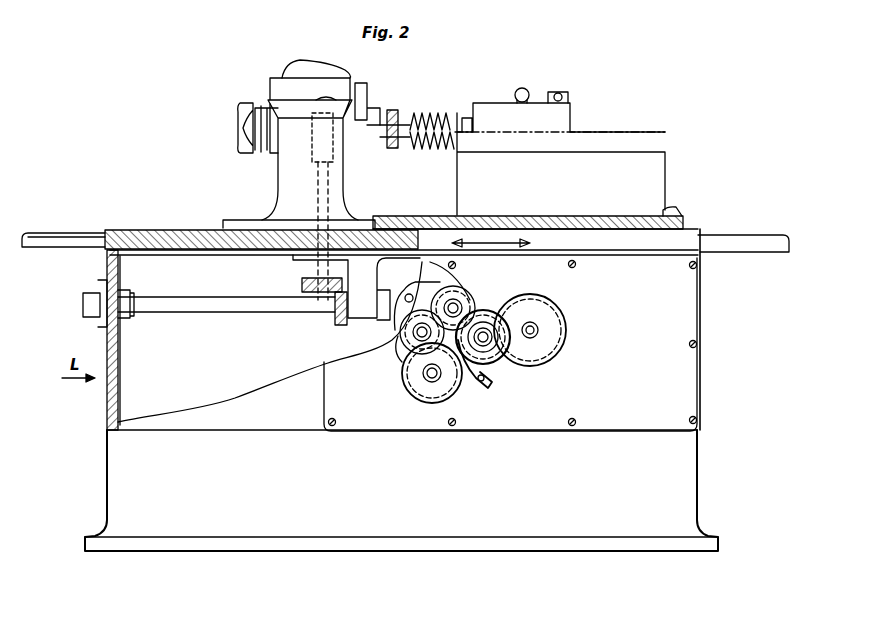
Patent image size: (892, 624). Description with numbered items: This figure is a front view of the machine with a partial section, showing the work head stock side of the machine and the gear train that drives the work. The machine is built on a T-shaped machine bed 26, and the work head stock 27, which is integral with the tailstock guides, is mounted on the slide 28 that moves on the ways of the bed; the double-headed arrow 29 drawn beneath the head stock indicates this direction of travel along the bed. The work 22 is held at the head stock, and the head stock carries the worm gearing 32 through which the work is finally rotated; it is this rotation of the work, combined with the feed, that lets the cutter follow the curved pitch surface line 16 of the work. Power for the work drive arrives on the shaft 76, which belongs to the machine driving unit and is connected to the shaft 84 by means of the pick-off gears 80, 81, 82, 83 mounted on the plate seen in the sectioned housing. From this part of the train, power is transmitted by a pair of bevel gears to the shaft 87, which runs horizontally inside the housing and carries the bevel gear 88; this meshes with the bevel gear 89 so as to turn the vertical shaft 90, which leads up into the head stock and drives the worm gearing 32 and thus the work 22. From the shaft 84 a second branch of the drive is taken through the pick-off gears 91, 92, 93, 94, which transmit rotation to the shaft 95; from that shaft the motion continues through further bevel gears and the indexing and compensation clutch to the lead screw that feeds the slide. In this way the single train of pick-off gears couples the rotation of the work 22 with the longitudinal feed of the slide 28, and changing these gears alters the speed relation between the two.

The curved pitch surface line 16 is at (466, 112).
The work 22 is at (433, 114).
The machine bed 26 is at (118, 357).
The work head stock 27 is at (457, 218).
The slide 28 is at (152, 230).
The arrow of movement 29 is at (489, 243).
The worm gearing 32 is at (312, 134).
The shaft 76 is at (432, 384).
The pick-off gear 80 is at (408, 388).
The pick-off gear 81 is at (405, 342).
The pick-off gear 82 is at (418, 310).
The pick-off gear 83 is at (446, 288).
The shaft 84 is at (456, 292).
The shaft 87 is at (222, 303).
The bevel gear 88 is at (335, 318).
The bevel gear 89 is at (302, 283).
The shaft 90 is at (320, 198).
The pick-off gear 91 is at (468, 312).
The pick-off gear 92 is at (491, 323).
The pick-off gear 93 is at (494, 352).
The pick-off gear 94 is at (567, 335).
The shaft 95 is at (536, 326).